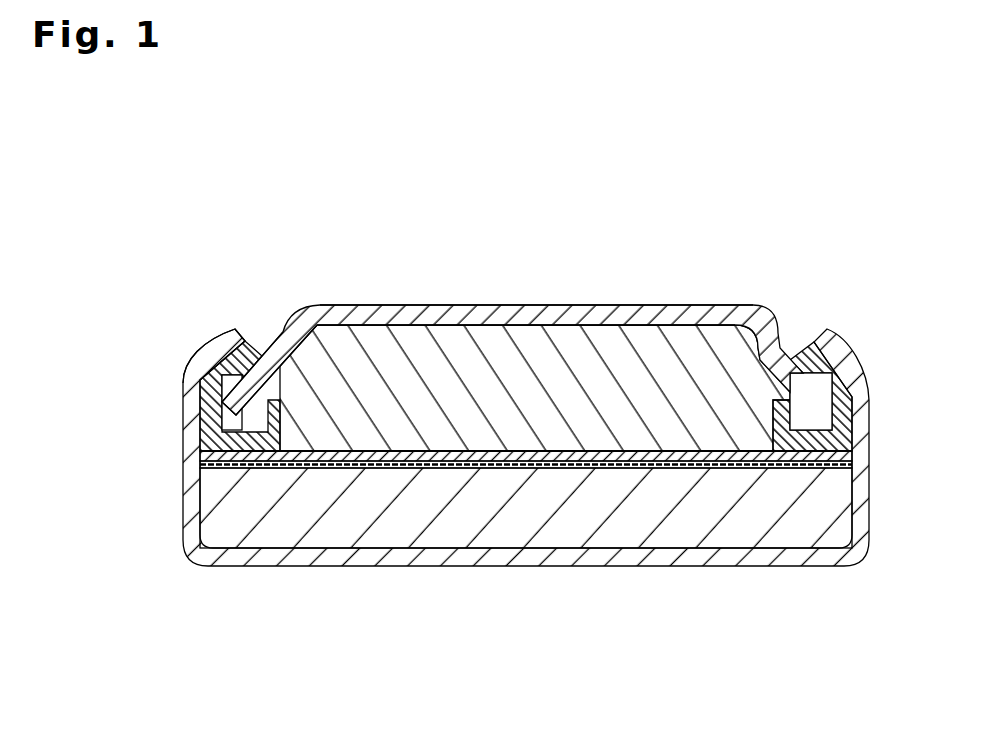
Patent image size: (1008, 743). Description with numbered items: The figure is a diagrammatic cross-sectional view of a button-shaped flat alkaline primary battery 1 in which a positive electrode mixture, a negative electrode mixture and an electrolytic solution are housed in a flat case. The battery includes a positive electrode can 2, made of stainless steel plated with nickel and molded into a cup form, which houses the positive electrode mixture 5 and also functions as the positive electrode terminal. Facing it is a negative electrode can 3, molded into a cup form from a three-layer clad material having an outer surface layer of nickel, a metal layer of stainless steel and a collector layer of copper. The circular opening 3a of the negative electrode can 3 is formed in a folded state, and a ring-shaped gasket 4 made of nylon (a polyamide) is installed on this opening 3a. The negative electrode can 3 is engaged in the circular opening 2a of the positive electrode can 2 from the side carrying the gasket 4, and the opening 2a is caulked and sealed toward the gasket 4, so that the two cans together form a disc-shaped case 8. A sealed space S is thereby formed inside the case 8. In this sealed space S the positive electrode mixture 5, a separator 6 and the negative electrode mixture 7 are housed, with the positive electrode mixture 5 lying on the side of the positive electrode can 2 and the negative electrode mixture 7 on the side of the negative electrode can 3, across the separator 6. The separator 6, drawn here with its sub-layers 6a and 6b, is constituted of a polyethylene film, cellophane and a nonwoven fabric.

The flat alkaline primary battery 1 is at (170, 348).
The positive electrode can 2 is at (284, 567).
The circular opening of the positive electrode can 2a is at (233, 327).
The negative electrode can 3 is at (524, 306).
The circular opening of the negative electrode can 3a is at (258, 356).
The gasket 4 is at (812, 410).
The positive electrode mixture 5 is at (563, 532).
The separator 6 is at (92, 415).
The separator layer 6a is at (204, 464).
The separator layer 6b is at (204, 457).
The negative electrode mixture 7 is at (458, 338).
The case 8 is at (406, 305).
The sealed space S is at (342, 332).